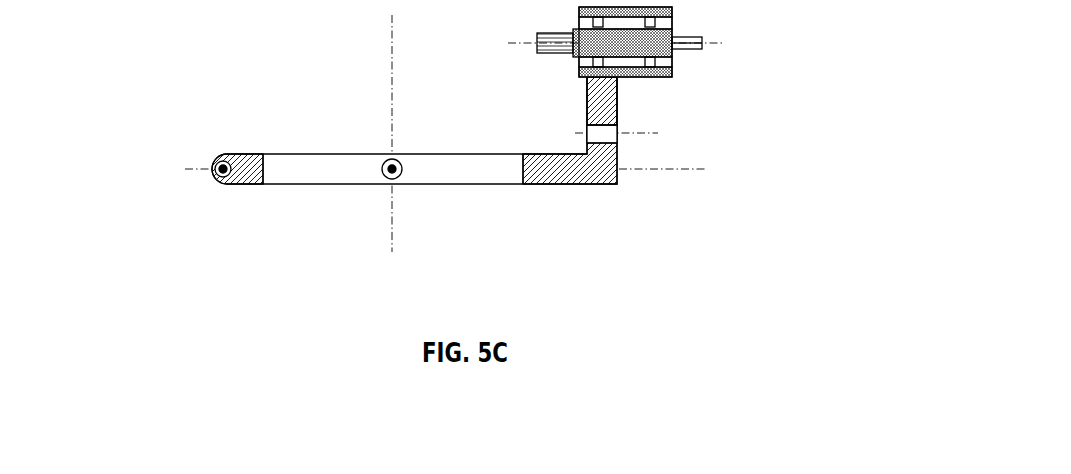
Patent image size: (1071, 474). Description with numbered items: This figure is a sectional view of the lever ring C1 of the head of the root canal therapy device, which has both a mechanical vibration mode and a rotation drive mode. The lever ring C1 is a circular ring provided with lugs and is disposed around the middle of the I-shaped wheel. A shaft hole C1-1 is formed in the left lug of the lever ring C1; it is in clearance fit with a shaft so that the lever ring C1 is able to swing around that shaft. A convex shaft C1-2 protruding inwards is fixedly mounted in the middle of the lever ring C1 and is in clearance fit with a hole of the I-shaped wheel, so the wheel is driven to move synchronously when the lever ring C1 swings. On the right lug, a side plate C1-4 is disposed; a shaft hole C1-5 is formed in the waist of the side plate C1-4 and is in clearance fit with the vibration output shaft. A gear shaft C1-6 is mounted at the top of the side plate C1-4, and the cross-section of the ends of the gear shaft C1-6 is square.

The lever ring C1 is at (322, 161).
The shaft hole C1-1 is at (221, 172).
The convex shaft C1-2 is at (390, 163).
The side plate C1-4 is at (605, 93).
The shaft hole C1-5 is at (602, 133).
The gear shaft C1-6 is at (634, 47).